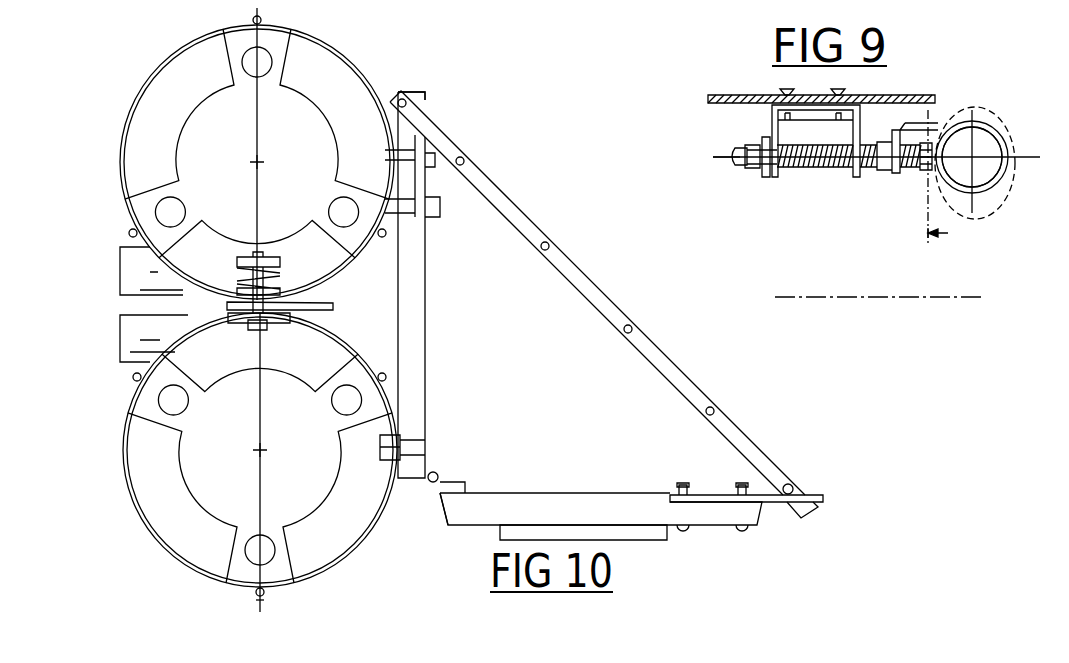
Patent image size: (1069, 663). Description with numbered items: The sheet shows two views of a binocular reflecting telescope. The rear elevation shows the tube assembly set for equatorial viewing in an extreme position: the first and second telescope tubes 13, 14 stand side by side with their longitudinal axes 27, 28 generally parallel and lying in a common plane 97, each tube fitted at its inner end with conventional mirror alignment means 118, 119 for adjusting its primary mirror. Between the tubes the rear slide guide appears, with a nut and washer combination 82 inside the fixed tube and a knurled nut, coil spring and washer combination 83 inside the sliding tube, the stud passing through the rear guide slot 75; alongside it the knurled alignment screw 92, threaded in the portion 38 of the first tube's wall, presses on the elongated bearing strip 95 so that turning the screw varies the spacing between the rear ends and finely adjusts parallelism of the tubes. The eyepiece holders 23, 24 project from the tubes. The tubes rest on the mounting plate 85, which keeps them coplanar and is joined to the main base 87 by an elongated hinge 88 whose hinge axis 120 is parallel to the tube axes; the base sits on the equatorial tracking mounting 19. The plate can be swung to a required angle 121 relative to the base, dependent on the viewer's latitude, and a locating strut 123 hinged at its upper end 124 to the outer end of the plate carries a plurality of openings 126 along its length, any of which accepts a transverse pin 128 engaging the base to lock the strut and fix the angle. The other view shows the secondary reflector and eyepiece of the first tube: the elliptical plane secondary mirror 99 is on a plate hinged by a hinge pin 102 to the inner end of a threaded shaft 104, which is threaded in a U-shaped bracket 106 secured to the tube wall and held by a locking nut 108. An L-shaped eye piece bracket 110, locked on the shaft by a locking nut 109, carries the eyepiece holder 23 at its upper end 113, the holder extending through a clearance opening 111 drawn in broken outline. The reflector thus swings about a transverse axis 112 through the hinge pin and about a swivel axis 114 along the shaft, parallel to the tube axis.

In FIG. 9, the first telescope tube 13 is at (846, 77).
In FIG. 10, the first telescope tube 13 is at (126, 410).
In FIG. 10, the second telescope tube 14 is at (159, 65).
In FIG. 10, the equatorial tracking mounting 19 is at (640, 540).
In FIG. 9, the eyepiece holder 23 is at (1003, 141).
In FIG. 10, the eyepiece holder 23 is at (122, 334).
In FIG. 10, the eyepiece holder 24 is at (133, 257).
In FIG. 9, the longitudinal axis 27 is at (868, 297).
In FIG. 10, the longitudinal axis 27 is at (262, 445).
In FIG. 10, the longitudinal axis 28 is at (257, 163).
In FIG. 9, the portion of the side wall 38 is at (902, 98).
In FIG. 10, the rear guide slot 75 is at (238, 285).
In FIG. 10, the nut and washer combination 82 is at (274, 325).
In FIG. 10, the knurled nut, coil spring and washer combination 83 is at (250, 258).
In FIG. 10, the mounting plate 85 is at (413, 268).
In FIG. 10, the main base 87 is at (694, 513).
In FIG. 10, the elongated hinge 88 is at (432, 483).
In FIG. 10, the knurled alignment screw 92 is at (262, 256).
In FIG. 10, the elongated bearing strip 95 is at (313, 302).
In FIG. 10, the plane 97 is at (262, 608).
In FIG. 9, the plane secondary mirror 99 is at (984, 165).
In FIG. 9, the hinge pin 102 is at (923, 168).
In FIG. 9, the threaded shaft 104 is at (805, 160).
In FIG. 9, the U-shaped bracket 106 is at (775, 120).
In FIG. 9, the locking nut 108 is at (752, 146).
In FIG. 9, the locking nut 109 is at (892, 122).
In FIG. 9, the eye piece bracket 110 is at (972, 102).
In FIG. 9, the clearance opening 111 is at (998, 215).
In FIG. 9, the transverse axis 112 is at (959, 178).
In FIG. 9, the upper end 113 is at (906, 124).
In FIG. 9, the swivel axis 114 is at (725, 158).
In FIG. 10, the mirror alignment means 118 is at (212, 467).
In FIG. 10, the mirror alignment means 119 is at (215, 137).
In FIG. 10, the hinge axis 120 is at (440, 472).
In FIG. 10, the angle 121 is at (425, 389).
In FIG. 10, the locating strut 123 is at (588, 289).
In FIG. 10, the upper end 124 is at (432, 137).
In FIG. 10, the openings 126 is at (547, 242).
In FIG. 10, the transverse pin 128 is at (789, 484).